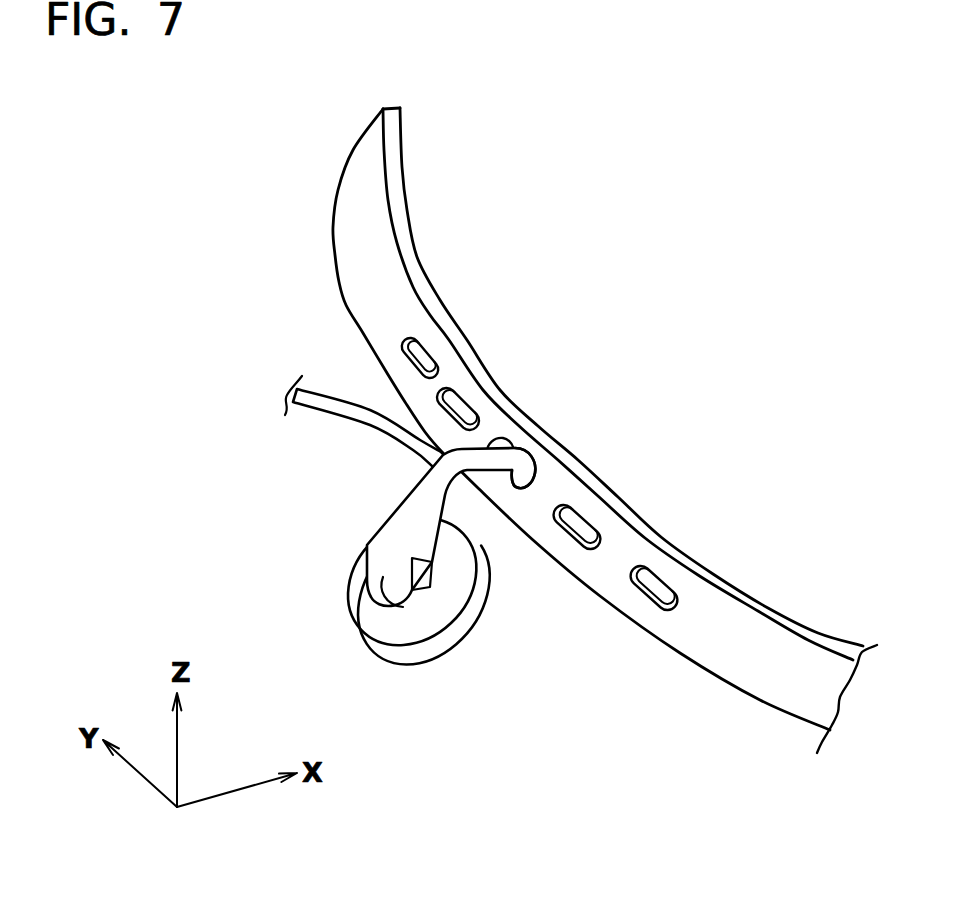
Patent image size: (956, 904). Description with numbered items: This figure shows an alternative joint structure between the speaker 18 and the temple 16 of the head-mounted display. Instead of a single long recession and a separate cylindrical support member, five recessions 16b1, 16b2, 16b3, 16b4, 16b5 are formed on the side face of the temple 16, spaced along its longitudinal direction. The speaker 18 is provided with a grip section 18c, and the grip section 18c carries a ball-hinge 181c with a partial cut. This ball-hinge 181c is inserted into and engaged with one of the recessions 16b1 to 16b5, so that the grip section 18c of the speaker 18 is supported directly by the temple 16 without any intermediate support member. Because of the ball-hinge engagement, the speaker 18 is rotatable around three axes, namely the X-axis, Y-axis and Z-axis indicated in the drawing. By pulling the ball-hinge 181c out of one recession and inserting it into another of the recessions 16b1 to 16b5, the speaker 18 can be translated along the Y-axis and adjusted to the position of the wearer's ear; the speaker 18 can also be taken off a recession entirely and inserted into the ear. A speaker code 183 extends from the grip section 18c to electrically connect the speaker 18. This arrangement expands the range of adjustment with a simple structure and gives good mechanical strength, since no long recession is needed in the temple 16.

The temple 16 is at (421, 268).
The recession 16b1 is at (652, 586).
The recession 16b2 is at (580, 520).
The recession 16b3 is at (505, 436).
The recession 16b4 is at (463, 407).
The recession 16b5 is at (426, 357).
The speaker 18 is at (428, 643).
The grip section 18c is at (386, 537).
The ball-hinge 181c is at (500, 460).
The speaker code 183 is at (313, 388).